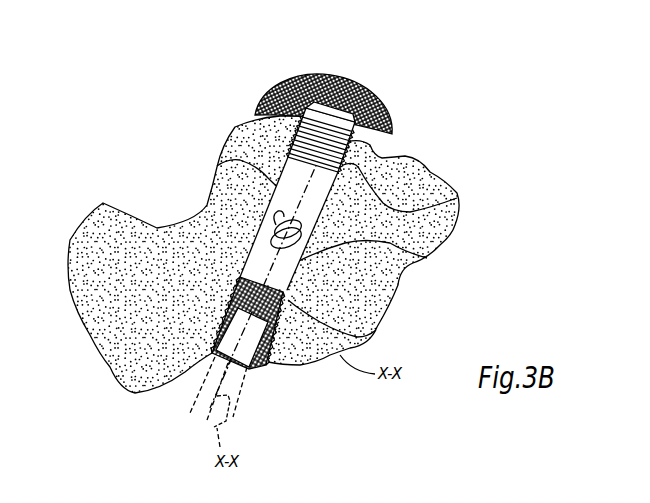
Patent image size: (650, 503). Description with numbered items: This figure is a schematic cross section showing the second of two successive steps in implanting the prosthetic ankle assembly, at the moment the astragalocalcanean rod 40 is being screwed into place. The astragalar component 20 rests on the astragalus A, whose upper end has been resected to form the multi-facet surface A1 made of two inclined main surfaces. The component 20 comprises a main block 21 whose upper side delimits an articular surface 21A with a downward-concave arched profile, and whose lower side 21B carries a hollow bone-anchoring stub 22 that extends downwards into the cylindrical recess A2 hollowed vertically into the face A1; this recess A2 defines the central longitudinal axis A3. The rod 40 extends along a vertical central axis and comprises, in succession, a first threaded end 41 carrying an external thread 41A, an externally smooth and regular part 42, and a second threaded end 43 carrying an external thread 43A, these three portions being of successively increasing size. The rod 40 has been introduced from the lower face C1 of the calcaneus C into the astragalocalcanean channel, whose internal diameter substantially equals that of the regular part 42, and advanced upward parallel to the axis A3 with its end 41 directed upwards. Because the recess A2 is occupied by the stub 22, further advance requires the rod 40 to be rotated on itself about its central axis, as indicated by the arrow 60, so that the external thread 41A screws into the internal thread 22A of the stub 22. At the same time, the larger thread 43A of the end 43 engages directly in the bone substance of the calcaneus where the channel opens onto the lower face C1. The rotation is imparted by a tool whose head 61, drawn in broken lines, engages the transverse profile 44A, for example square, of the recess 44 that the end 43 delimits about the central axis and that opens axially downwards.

The astragalar component 20 is at (320, 210).
The main block 21 is at (380, 110).
The articular surface 21A is at (323, 70).
The lower side of the block 21B is at (390, 167).
The hollow bone-anchoring stub 22 is at (285, 118).
The internal thread 22A is at (389, 121).
The astragalocalcanean rod 40 is at (258, 236).
The first threaded end 41 is at (217, 158).
The external thread of the first end 41A is at (447, 207).
The externally smooth and regular part 42 is at (397, 285).
The second threaded end 43 is at (222, 315).
The external thread of the second end 43A is at (290, 360).
The recess 44 is at (232, 368).
The transverse profile 44A is at (200, 408).
The arrow 60 is at (303, 184).
The tool head 61 is at (215, 398).
The astragalus A is at (455, 231).
The multi-facet surface A1 is at (262, 102).
The cylindrical recess A2 is at (269, 106).
The central longitudinal axis A3 is at (348, 88).
The cortical bone C is at (357, 325).
The lower face of the calcaneus C1 is at (288, 368).